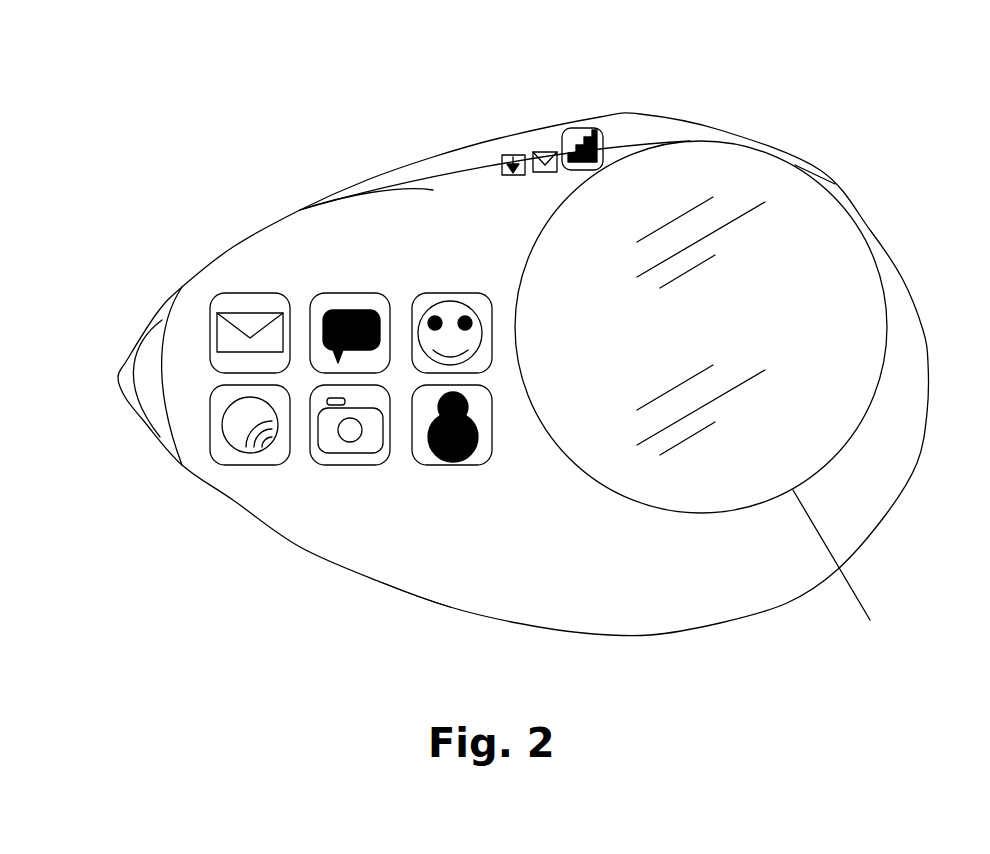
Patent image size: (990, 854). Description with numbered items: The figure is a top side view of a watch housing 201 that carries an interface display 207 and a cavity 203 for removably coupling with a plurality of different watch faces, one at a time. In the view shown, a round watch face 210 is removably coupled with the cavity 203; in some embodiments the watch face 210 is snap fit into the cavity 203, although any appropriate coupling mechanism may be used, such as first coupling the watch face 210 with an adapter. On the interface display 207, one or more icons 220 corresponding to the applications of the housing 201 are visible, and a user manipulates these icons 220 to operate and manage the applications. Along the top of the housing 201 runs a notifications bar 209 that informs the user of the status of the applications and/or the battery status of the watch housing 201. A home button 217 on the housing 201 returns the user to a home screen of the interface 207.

The watch housing 201 is at (215, 241).
The cavity 203 is at (903, 617).
The interface display 207 is at (402, 570).
The notifications bar 209 is at (637, 127).
The round watch face 210 is at (843, 235).
The home button 217 is at (147, 352).
The icons 220 is at (353, 483).